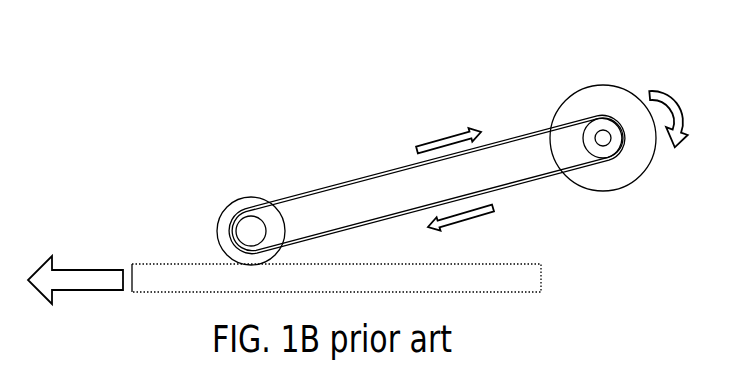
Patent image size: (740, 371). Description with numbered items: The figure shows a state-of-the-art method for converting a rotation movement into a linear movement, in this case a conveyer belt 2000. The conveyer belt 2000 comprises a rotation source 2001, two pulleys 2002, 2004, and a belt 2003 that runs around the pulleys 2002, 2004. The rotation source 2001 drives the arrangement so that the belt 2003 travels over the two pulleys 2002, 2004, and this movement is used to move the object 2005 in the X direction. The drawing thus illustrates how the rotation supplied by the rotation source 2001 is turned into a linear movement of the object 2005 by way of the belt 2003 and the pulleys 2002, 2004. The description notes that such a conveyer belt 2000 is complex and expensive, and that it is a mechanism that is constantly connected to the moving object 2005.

The conveyer belt 2000 is at (396, 121).
The rotation source 2001 is at (603, 93).
The pulley 2002 is at (615, 141).
The belt 2003 is at (308, 181).
The pulley 2004 is at (248, 226).
The object 2005 is at (164, 256).